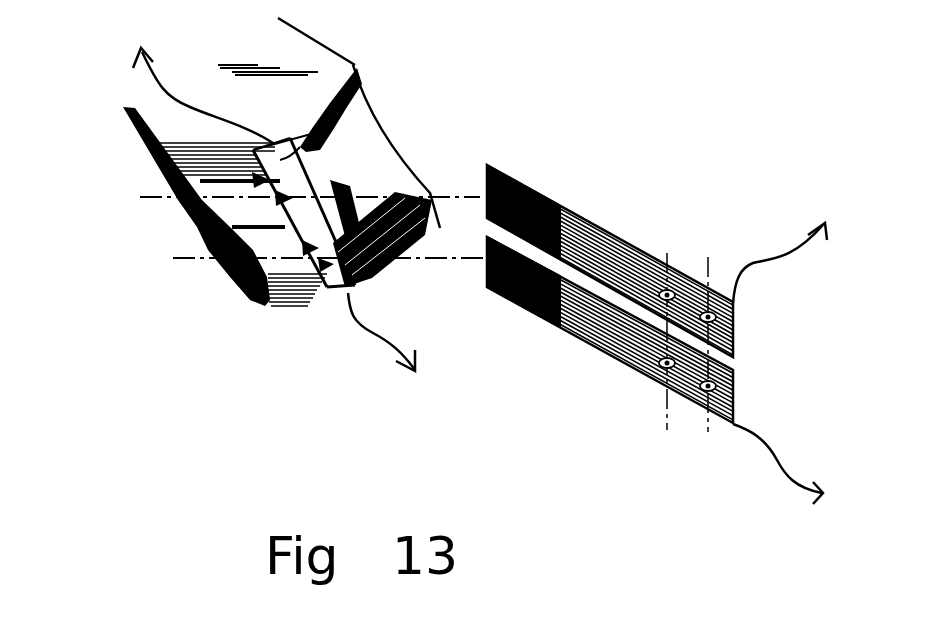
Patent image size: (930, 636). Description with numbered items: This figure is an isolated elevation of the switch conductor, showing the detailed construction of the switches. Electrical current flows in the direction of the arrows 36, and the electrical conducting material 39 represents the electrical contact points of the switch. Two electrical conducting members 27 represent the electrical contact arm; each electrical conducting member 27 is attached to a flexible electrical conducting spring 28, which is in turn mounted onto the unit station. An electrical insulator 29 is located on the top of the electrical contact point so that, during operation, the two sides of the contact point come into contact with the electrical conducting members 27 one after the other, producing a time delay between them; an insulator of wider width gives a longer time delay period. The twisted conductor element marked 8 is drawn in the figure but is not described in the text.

The twisted conductor bundle 8 is at (335, 63).
The electrical conducting member 27 is at (545, 193).
The flexible electrical conducting spring 28 is at (603, 247).
The electrical insulator 29 is at (287, 203).
The arrow 36 is at (152, 78).
The electrical conducting material 39 is at (293, 215).